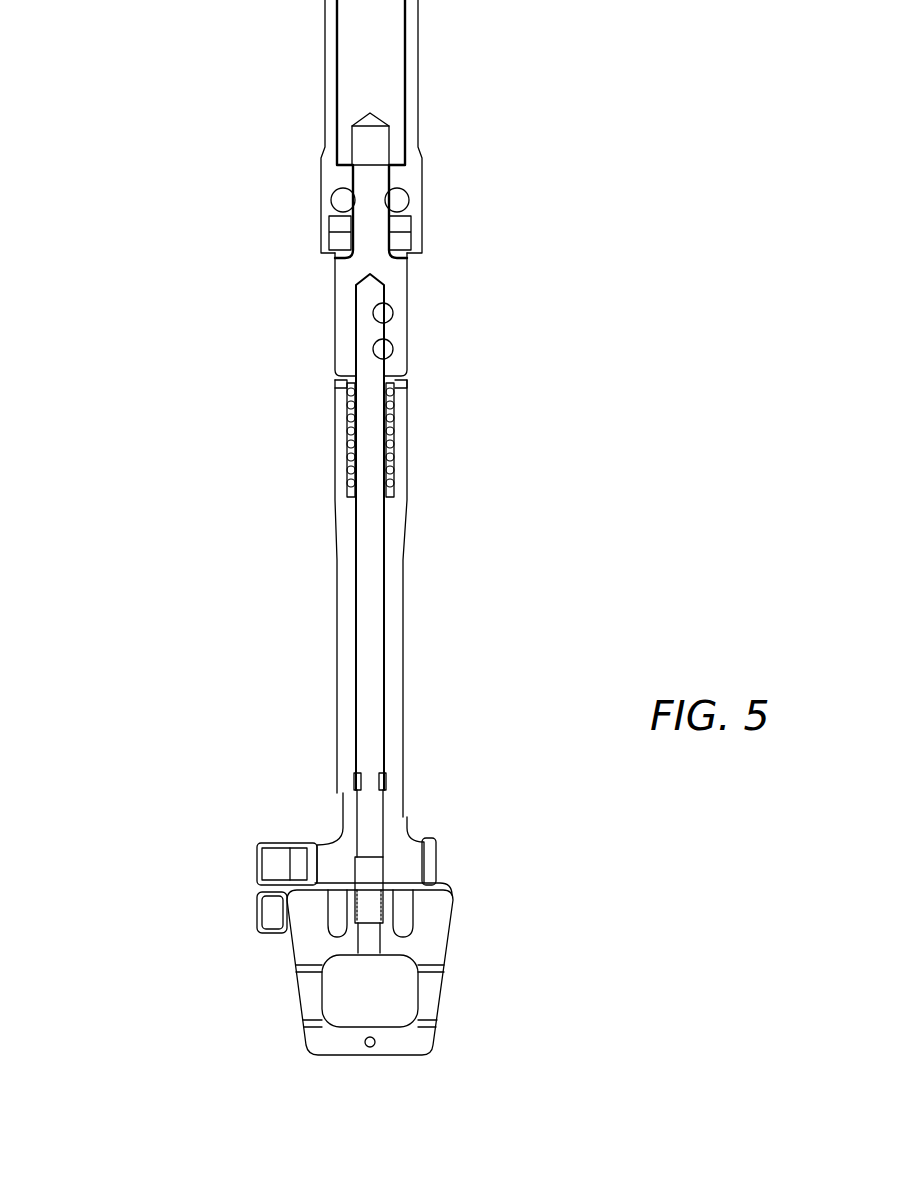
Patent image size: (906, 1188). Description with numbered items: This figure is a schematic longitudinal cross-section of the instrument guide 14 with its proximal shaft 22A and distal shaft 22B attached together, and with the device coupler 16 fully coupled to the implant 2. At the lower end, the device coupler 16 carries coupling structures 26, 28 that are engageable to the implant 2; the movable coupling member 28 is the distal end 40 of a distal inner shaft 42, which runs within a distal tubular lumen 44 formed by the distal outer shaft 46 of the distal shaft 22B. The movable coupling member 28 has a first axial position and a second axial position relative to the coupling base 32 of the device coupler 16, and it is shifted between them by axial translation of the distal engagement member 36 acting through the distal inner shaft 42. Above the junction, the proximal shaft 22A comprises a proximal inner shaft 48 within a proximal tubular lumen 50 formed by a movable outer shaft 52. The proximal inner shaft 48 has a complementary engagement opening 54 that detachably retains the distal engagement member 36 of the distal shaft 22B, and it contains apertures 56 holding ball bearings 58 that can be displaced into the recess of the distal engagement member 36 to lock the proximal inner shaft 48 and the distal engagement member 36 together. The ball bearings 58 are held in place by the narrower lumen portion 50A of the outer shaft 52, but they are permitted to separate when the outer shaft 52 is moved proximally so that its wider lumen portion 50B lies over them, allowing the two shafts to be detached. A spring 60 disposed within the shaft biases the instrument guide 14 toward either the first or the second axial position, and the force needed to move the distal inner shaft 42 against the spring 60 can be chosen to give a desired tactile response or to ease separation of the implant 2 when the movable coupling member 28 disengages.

The implant 2 is at (314, 1001).
The instrument guide 14 is at (590, 425).
The device coupler 16 is at (230, 867).
The proximal shaft 22A is at (160, 86).
The distal shaft 22B is at (228, 608).
The coupling structure 26 is at (410, 925).
The movable coupling member 28 is at (374, 915).
The coupling base 32 is at (300, 865).
The distal engagement member 36 is at (375, 225).
The distal end 40 is at (372, 888).
The distal inner shaft 42 is at (367, 590).
The distal tubular lumen 44 is at (352, 628).
The distal outer shaft 46 is at (410, 655).
The proximal inner shaft 48 is at (367, 90).
The proximal tubular lumen 50 is at (334, 95).
The narrower lumen portion 50A is at (334, 47).
The wider lumen portion 50B is at (334, 252).
The movable outer shaft 52 is at (410, 52).
The complementary engagement opening 54 is at (377, 169).
The aperture 56 is at (394, 192).
The ball bearing 58 is at (345, 198).
The spring 60 is at (346, 460).